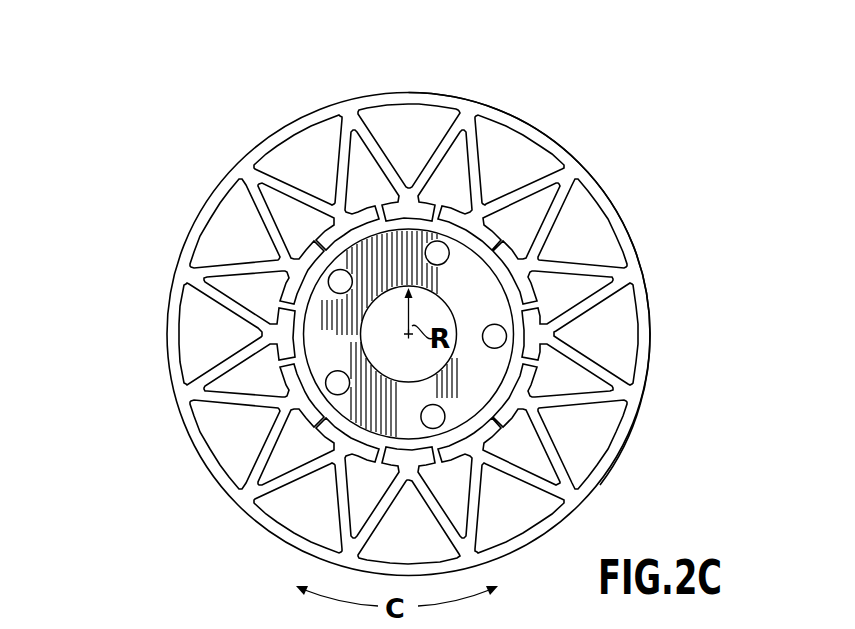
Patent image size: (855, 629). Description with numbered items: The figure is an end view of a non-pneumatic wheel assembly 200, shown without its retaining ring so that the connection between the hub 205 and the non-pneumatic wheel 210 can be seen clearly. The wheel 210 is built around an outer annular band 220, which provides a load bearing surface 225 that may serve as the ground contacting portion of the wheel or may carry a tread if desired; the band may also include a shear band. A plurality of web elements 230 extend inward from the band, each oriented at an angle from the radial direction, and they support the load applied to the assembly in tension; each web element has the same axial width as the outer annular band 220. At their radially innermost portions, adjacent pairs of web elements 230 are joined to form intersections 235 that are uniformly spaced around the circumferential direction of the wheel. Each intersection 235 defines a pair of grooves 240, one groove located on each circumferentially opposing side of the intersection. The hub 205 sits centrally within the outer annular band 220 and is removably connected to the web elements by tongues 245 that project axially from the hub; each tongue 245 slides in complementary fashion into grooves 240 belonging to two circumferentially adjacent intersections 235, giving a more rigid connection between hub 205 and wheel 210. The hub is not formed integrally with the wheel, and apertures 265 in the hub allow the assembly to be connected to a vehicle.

The non-pneumatic wheel assembly 200 is at (675, 161).
The hub 205 is at (318, 317).
The non-pneumatic wheel 210 is at (518, 90).
The outer annular band 220 is at (651, 360).
The load bearing surface 225 is at (654, 437).
The web elements 230 is at (290, 183).
The intersections 235 is at (405, 186).
The grooves 240 is at (381, 198).
The tongues 245 is at (505, 242).
The apertures 265 is at (320, 381).